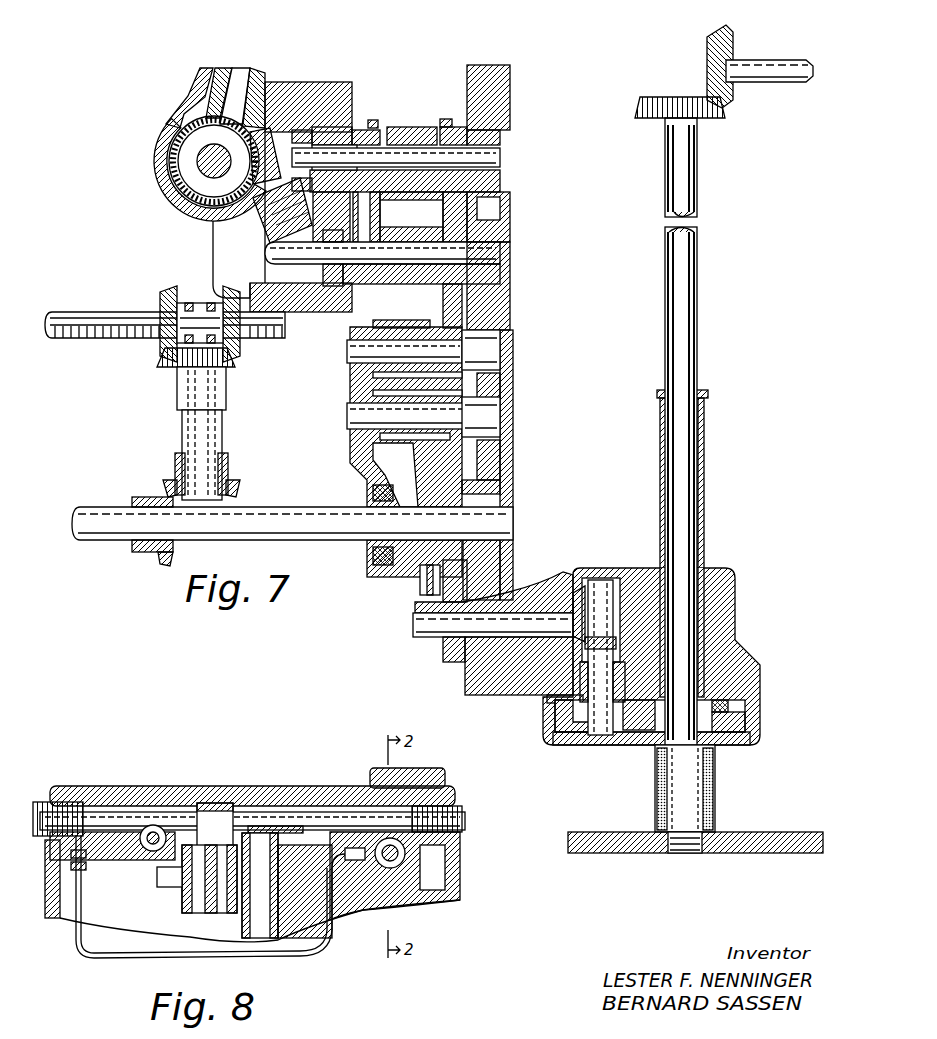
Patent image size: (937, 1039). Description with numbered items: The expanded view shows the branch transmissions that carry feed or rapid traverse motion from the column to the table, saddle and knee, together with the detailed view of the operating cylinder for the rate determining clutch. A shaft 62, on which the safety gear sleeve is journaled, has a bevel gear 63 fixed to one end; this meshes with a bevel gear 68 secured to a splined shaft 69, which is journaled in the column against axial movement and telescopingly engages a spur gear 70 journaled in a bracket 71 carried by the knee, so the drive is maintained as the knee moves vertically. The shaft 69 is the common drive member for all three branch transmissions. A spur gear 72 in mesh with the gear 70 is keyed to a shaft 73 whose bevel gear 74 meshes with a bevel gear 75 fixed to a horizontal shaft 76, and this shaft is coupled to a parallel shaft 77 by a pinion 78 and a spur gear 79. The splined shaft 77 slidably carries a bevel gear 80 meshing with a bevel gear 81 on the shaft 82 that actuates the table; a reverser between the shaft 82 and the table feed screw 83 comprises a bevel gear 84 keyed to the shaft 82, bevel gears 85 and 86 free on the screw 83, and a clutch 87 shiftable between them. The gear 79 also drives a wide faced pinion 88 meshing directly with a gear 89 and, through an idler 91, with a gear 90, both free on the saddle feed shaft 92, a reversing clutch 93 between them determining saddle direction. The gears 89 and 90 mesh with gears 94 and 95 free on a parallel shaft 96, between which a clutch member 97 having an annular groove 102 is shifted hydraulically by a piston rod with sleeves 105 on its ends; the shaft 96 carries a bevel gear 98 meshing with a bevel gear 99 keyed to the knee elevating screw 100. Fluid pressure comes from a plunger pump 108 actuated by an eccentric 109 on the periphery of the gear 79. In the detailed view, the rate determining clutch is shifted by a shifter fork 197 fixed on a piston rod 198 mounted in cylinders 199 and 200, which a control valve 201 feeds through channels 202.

In FIG. 7, the shaft 62 is at (780, 48).
In FIG. 7, the bevel gear 63 is at (718, 33).
In FIG. 7, the bevel gear 68 is at (640, 108).
In FIG. 7, the splined shaft 69 is at (681, 321).
In FIG. 7, the spur gear 70 is at (725, 707).
In FIG. 7, the bracket 71 is at (735, 593).
In FIG. 7, the spur gear 72 is at (545, 722).
In FIG. 7, the shaft 73 is at (593, 747).
In FIG. 7, the bevel gear 74 is at (648, 570).
In FIG. 7, the bevel gear 75 is at (573, 598).
In FIG. 7, the horizontal shaft 76 is at (415, 626).
In FIG. 7, the shaft 77 is at (353, 530).
In FIG. 7, the pinion 78 is at (445, 653).
In FIG. 7, the spur gear 79 is at (467, 583).
In FIG. 7, the bevel gear 80 is at (143, 497).
In FIG. 7, the bevel gear 81 is at (175, 461).
In FIG. 7, the shaft 82 is at (222, 395).
In FIG. 7, the table feed screw 83 is at (80, 316).
In FIG. 7, the bevel gear 84 is at (178, 368).
In FIG. 7, the bevel gear 85 is at (165, 290).
In FIG. 7, the bevel gear 86 is at (226, 292).
In FIG. 7, the clutch 87 is at (200, 300).
In FIG. 7, the wide faced pinion 88 is at (465, 431).
In FIG. 7, the gear 89 is at (447, 308).
In FIG. 7, the gear 90 is at (382, 312).
In FIG. 7, the idler 91 is at (352, 385).
In FIG. 7, the saddle feed shaft 92 is at (458, 256).
In FIG. 7, the reversing clutch 93 is at (408, 224).
In FIG. 7, the gear 94 is at (447, 120).
In FIG. 7, the gear 95 is at (373, 121).
In FIG. 7, the shaft 96 is at (493, 156).
In FIG. 7, the clutch member 97 is at (395, 127).
In FIG. 7, the bevel gear 98 is at (268, 82).
In FIG. 7, the bevel gear 99 is at (160, 140).
In FIG. 7, the knee elevating screw 100 is at (203, 166).
In FIG. 7, the annular groove 102 is at (405, 127).
In FIG. 8, the sleeves 105 is at (90, 851).
In FIG. 7, the plunger pump 108 is at (420, 589).
In FIG. 7, the eccentric 109 is at (423, 579).
In FIG. 8, the shifter fork 197 is at (210, 810).
In FIG. 8, the piston rod 198 is at (270, 815).
In FIG. 8, the cylinder 199 is at (108, 808).
In FIG. 8, the cylinder 200 is at (363, 788).
In FIG. 8, the control valve 201 is at (383, 908).
In FIG. 8, the channels 202 is at (362, 776).